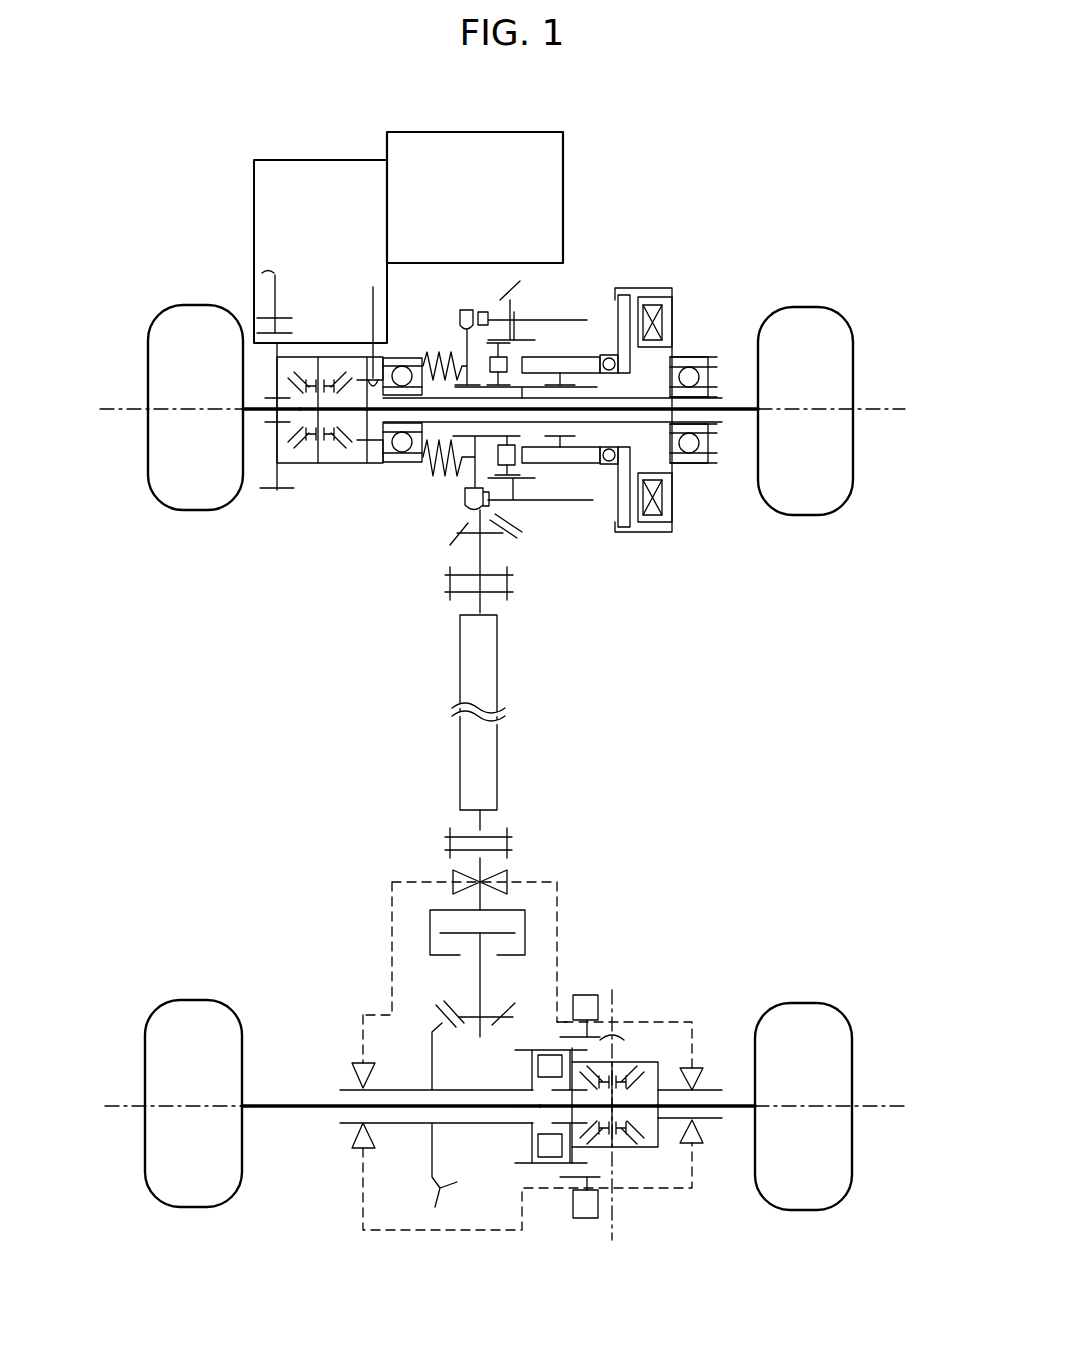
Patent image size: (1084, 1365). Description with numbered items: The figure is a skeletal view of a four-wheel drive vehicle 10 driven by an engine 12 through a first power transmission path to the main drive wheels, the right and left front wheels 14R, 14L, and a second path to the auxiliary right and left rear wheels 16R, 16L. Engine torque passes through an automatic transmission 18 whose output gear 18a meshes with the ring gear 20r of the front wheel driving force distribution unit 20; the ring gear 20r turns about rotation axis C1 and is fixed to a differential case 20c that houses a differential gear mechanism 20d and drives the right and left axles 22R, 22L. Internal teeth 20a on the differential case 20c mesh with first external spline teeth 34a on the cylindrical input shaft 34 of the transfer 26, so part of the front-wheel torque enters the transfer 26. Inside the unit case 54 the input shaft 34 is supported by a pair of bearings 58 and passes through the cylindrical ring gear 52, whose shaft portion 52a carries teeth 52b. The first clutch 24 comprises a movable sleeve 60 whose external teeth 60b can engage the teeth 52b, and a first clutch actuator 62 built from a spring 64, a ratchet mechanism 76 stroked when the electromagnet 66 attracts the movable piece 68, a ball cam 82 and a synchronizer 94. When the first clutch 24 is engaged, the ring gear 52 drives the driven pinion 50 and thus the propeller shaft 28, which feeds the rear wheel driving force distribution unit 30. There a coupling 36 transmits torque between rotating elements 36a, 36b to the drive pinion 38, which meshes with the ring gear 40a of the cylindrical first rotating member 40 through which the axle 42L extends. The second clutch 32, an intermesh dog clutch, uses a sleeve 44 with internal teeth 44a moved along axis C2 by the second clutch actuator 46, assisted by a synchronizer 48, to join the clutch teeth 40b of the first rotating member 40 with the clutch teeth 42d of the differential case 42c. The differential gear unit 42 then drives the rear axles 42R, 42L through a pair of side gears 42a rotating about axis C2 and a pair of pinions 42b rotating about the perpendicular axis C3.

The four-wheel drive vehicle 10 is at (563, 120).
The engine 12 is at (466, 140).
The left front wheel 14L is at (193, 318).
The right front wheel 14R is at (808, 338).
The left rear wheel 16L is at (195, 1027).
The right rear wheel 16R is at (807, 1030).
The automatic transmission 18 is at (322, 188).
The output gear 18a is at (287, 318).
The front wheel driving force distribution unit 20 is at (276, 423).
The ring gear 20r is at (262, 320).
The differential case 20c is at (290, 478).
The internal teeth 20a is at (360, 370).
The differential gear mechanism 20d is at (330, 450).
The left axle 22L is at (262, 407).
The right axle 22R is at (743, 408).
The first clutch 24 is at (492, 418).
The transfer 26 is at (620, 382).
The propeller shaft 28 is at (482, 678).
The rear wheel driving force distribution unit 30 is at (710, 946).
The second clutch 32 is at (536, 1175).
The input shaft 34 is at (650, 434).
The first external spline teeth 34a is at (357, 323).
The coupling 36 is at (484, 953).
The rotating element 36a is at (528, 920).
The rotating element 36b is at (478, 956).
The drive pinion 38 is at (510, 1017).
The first rotating member 40 is at (516, 1108).
The ring gear 40a is at (440, 1020).
The clutch teeth 40b is at (517, 1042).
The differential gear unit 42 is at (606, 1103).
The side gears 42a is at (640, 1095).
The pinions 42b is at (625, 1073).
The differential case 42c is at (660, 1147).
The clutch teeth 42d is at (557, 1018).
The left axle 42L is at (272, 1103).
The right axle 42R is at (742, 1100).
The sleeve 44 is at (600, 1180).
The internal teeth 44a is at (612, 1040).
The second clutch actuator 46 is at (590, 1005).
The synchronizer 48 is at (540, 1068).
The driven pinion 50 is at (505, 545).
The ring gear 52 is at (497, 278).
The shaft portion 52a is at (552, 312).
The teeth 52b is at (487, 300).
The unit case 54 is at (672, 288).
The bearings 58 is at (400, 450).
The movable sleeve 60 is at (452, 336).
The external teeth 60b is at (462, 308).
The first clutch actuator 62 is at (695, 328).
The spring 64 is at (440, 335).
The electromagnet 66 is at (651, 305).
The movable piece 68 is at (622, 295).
The ratchet mechanism 76 is at (551, 357).
The ball cam 82 is at (607, 355).
The synchronizer 94 is at (512, 460).
The rotation axis C1 is at (120, 398).
The rotation axis C2 is at (120, 1100).
The rotation axis C3 is at (612, 1222).